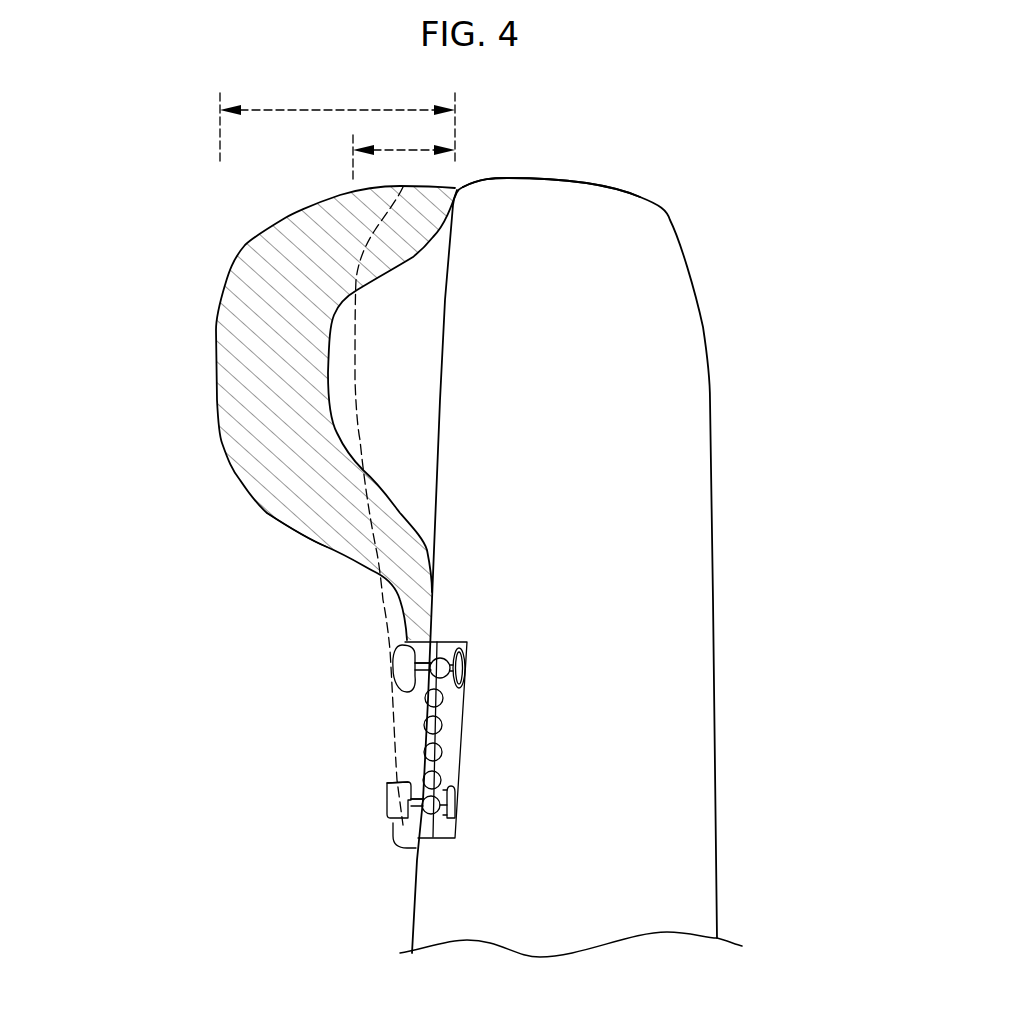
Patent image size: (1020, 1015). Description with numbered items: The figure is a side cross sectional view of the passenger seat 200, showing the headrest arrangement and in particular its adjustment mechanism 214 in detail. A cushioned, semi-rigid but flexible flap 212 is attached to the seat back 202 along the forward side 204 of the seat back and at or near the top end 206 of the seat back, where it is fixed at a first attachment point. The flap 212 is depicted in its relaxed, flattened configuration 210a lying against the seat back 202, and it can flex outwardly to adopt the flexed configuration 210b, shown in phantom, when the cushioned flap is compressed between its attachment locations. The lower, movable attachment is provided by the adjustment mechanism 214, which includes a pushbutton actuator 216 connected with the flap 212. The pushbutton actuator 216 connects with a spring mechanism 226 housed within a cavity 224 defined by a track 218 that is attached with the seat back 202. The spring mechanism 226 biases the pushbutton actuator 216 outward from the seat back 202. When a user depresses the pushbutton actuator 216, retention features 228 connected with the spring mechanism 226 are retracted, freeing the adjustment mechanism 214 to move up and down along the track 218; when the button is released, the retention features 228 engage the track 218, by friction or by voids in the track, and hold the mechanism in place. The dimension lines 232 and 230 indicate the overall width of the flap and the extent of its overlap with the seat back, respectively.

The passenger seat 200 is at (323, 496).
The seat back 202 is at (690, 400).
The forward side of the seat back 204 is at (519, 905).
The top end of the seat back 206 is at (562, 182).
The relaxed configuration 210a is at (290, 804).
The flexed configuration 210b is at (253, 546).
The flexible flap 212 is at (217, 348).
The adjustment mechanism 214 is at (370, 684).
The pushbutton actuator 216 is at (400, 662).
The track 218 is at (445, 710).
The cavity 224 is at (455, 767).
The spring mechanism 226 is at (460, 684).
The retention features 228 is at (440, 642).
The overlap width 230 is at (404, 150).
The flap width 232 is at (337, 123).